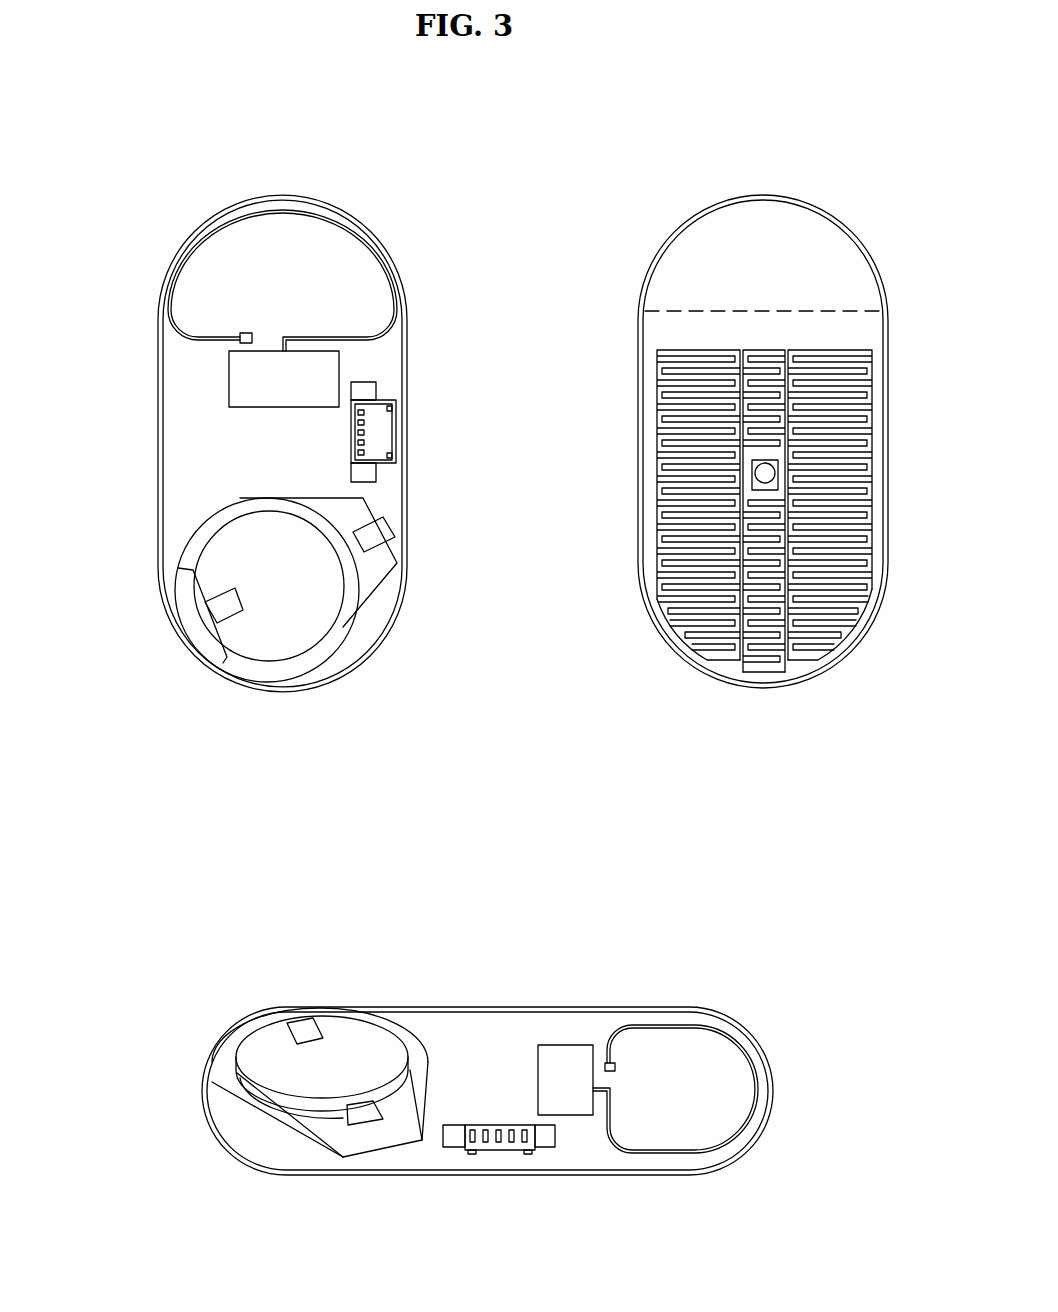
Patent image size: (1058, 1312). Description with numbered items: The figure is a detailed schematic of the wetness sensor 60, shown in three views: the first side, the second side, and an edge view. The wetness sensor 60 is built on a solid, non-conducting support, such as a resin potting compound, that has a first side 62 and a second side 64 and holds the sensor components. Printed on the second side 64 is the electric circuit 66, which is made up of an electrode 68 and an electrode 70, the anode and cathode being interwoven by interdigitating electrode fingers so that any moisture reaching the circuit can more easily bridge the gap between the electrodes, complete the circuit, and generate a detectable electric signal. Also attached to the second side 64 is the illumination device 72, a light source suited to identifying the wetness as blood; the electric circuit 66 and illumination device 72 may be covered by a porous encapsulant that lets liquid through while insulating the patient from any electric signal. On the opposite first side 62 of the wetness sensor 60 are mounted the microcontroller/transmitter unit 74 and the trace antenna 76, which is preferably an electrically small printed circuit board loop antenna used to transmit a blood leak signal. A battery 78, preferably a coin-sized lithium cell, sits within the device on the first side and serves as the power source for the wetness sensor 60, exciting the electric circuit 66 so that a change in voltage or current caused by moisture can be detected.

The wetness sensor 60 is at (173, 203).
The first side 62 is at (173, 340).
The second side 64 is at (853, 275).
The electric circuit 66 is at (907, 693).
The electrode 68 is at (870, 370).
The electrode 70 is at (685, 348).
The illumination device 72 is at (762, 480).
The microcontroller/transmitter unit 74 is at (330, 372).
The trace antenna 76 is at (270, 213).
The battery 78 is at (305, 628).